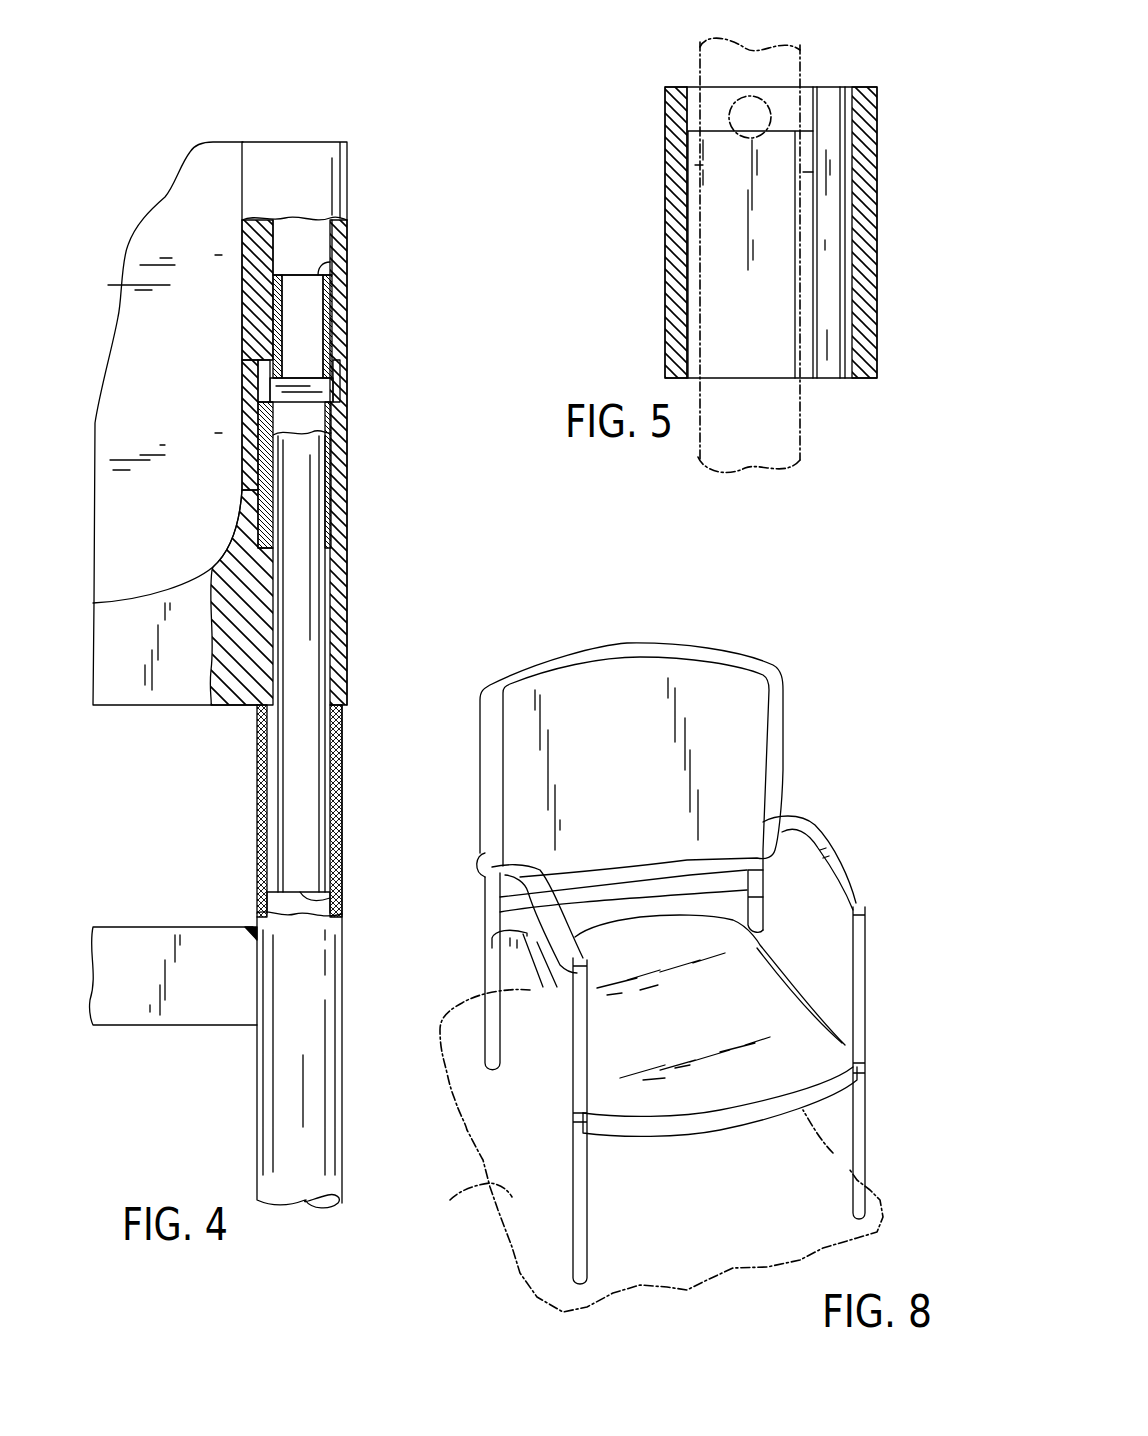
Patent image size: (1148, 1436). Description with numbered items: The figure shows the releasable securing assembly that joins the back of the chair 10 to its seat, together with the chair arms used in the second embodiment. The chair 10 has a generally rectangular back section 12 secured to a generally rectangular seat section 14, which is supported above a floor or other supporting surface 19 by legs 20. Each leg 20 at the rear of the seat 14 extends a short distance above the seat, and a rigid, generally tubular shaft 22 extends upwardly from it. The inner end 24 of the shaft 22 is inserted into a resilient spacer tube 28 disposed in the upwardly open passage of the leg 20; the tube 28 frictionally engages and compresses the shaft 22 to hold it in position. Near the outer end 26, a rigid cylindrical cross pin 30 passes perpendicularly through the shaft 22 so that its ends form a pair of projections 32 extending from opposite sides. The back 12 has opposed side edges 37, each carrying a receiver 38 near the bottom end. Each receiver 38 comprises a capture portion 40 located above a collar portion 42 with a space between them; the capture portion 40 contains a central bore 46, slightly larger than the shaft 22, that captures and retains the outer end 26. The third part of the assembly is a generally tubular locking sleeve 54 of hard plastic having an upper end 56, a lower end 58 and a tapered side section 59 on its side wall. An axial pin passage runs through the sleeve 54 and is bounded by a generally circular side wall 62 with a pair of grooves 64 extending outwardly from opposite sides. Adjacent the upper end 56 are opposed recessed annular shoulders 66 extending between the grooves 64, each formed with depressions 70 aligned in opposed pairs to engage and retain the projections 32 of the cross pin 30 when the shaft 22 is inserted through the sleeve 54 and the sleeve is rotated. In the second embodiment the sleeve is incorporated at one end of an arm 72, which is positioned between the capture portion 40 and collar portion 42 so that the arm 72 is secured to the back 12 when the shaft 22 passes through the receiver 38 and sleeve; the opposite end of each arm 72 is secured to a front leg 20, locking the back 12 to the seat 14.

In FIG. 8, the chair 10 is at (581, 622).
In FIG. 4, the back section 12 is at (108, 313).
In FIG. 8, the back section 12 is at (702, 640).
In FIG. 4, the seat section 14 is at (155, 922).
In FIG. 8, the seat section 14 is at (712, 1140).
In FIG. 8, the floor or other supporting surface 19 is at (651, 1151).
In FIG. 4, the leg 20 is at (342, 1050).
In FIG. 8, the leg 20 is at (570, 1197).
In FIG. 4, the shaft 22 is at (303, 658).
In FIG. 4, the inner end 24 is at (334, 905).
In FIG. 4, the outer end 26 is at (332, 266).
In FIG. 4, the spacer tube 28 is at (262, 767).
In FIG. 4, the cross pin 30 is at (315, 388).
In FIG. 4, the projection 32 is at (258, 367).
In FIG. 4, the side edge 37 is at (336, 174).
In FIG. 4, the receiver 38 is at (380, 312).
In FIG. 4, the capture portion 40 is at (341, 302).
In FIG. 4, the collar portion 42 is at (347, 590).
In FIG. 4, the central bore 46 is at (305, 233).
In FIG. 4, the locking sleeve 54 is at (343, 446).
In FIG. 5, the locking sleeve 54 is at (900, 132).
In FIG. 4, the upper end 56 is at (332, 348).
In FIG. 5, the upper end 56 is at (692, 106).
In FIG. 4, the lower end 58 is at (338, 550).
In FIG. 5, the lower end 58 is at (846, 380).
In FIG. 5, the tapered side section 59 is at (877, 232).
In FIG. 5, the circular side wall 62 is at (697, 102).
In FIG. 5, the groove 64 is at (825, 380).
In FIG. 5, the recessed annular shoulder 66 is at (687, 93).
In FIG. 5, the depression 70 is at (747, 138).
In FIG. 8, the arm 72 is at (820, 850).